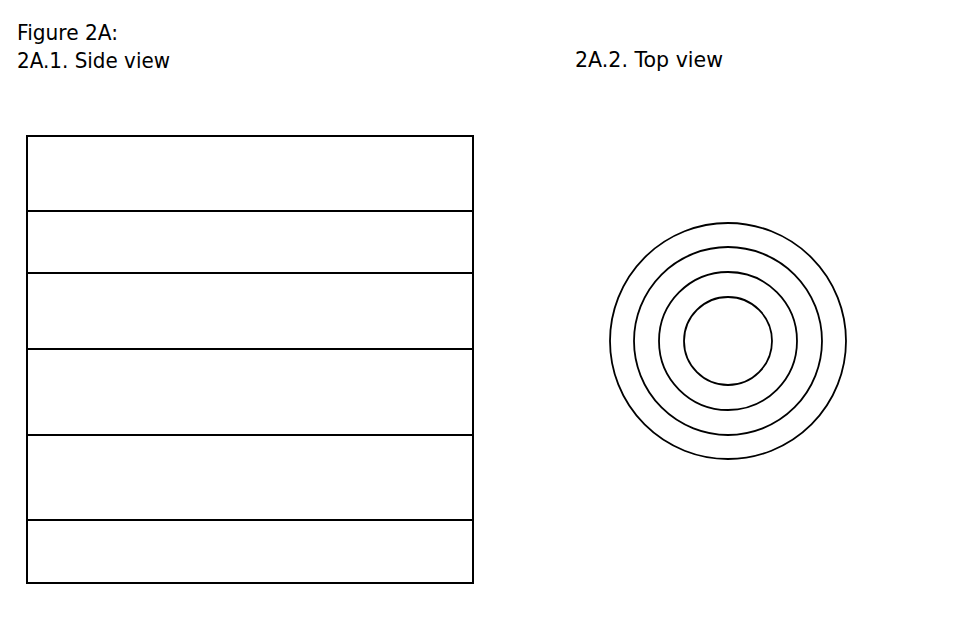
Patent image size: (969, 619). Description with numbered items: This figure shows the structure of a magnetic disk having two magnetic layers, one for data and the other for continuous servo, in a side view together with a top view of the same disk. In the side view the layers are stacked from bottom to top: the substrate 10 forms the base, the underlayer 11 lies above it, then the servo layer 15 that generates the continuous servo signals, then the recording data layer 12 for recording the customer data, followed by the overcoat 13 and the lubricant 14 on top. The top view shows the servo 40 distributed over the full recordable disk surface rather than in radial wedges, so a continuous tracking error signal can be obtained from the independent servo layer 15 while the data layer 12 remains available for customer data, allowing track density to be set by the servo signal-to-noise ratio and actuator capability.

The substrate 10 is at (250, 551).
The underlayer 11 is at (250, 477).
The recording data layer 12 is at (250, 311).
The overcoat 13 is at (250, 242).
The lubricant 14 is at (250, 173).
The servo layer 15 is at (250, 392).
The servo 40 is at (676, 265).